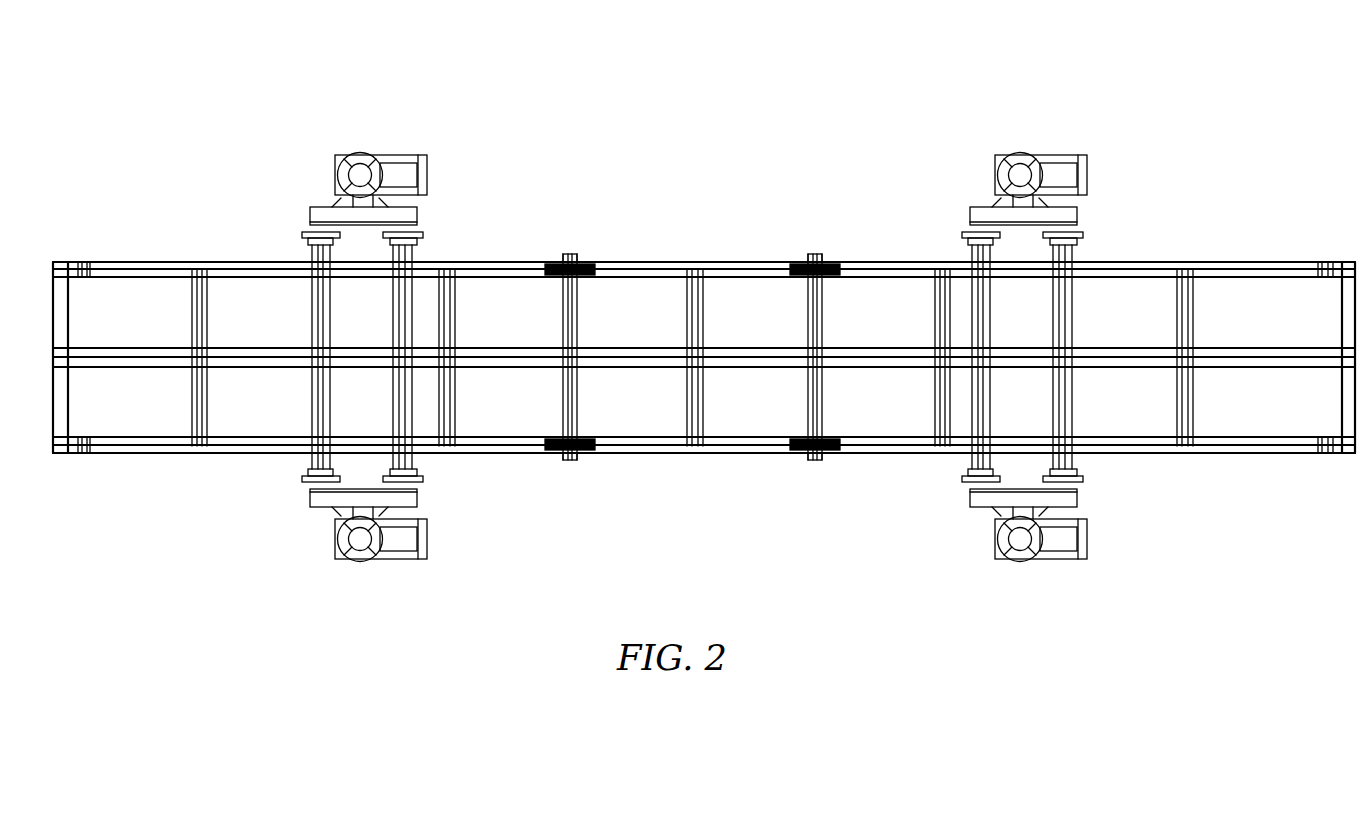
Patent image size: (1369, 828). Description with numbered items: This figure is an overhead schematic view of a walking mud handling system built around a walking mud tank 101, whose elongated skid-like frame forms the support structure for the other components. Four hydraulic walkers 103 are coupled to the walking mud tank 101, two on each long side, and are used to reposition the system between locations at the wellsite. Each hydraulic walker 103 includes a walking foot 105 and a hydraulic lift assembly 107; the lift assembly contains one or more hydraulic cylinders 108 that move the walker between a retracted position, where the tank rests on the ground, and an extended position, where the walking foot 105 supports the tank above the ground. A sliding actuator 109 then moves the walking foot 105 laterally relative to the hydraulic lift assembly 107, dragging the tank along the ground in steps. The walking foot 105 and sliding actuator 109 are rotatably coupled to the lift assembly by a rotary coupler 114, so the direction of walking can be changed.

The walking mud tank 101 is at (668, 260).
The hydraulic walker 103 is at (718, 358).
The walking foot 105 is at (418, 198).
The hydraulic lift assembly 107 is at (333, 160).
The hydraulic cylinder 108 is at (363, 170).
The sliding actuator 109 is at (390, 177).
The rotary coupler 114 is at (343, 183).